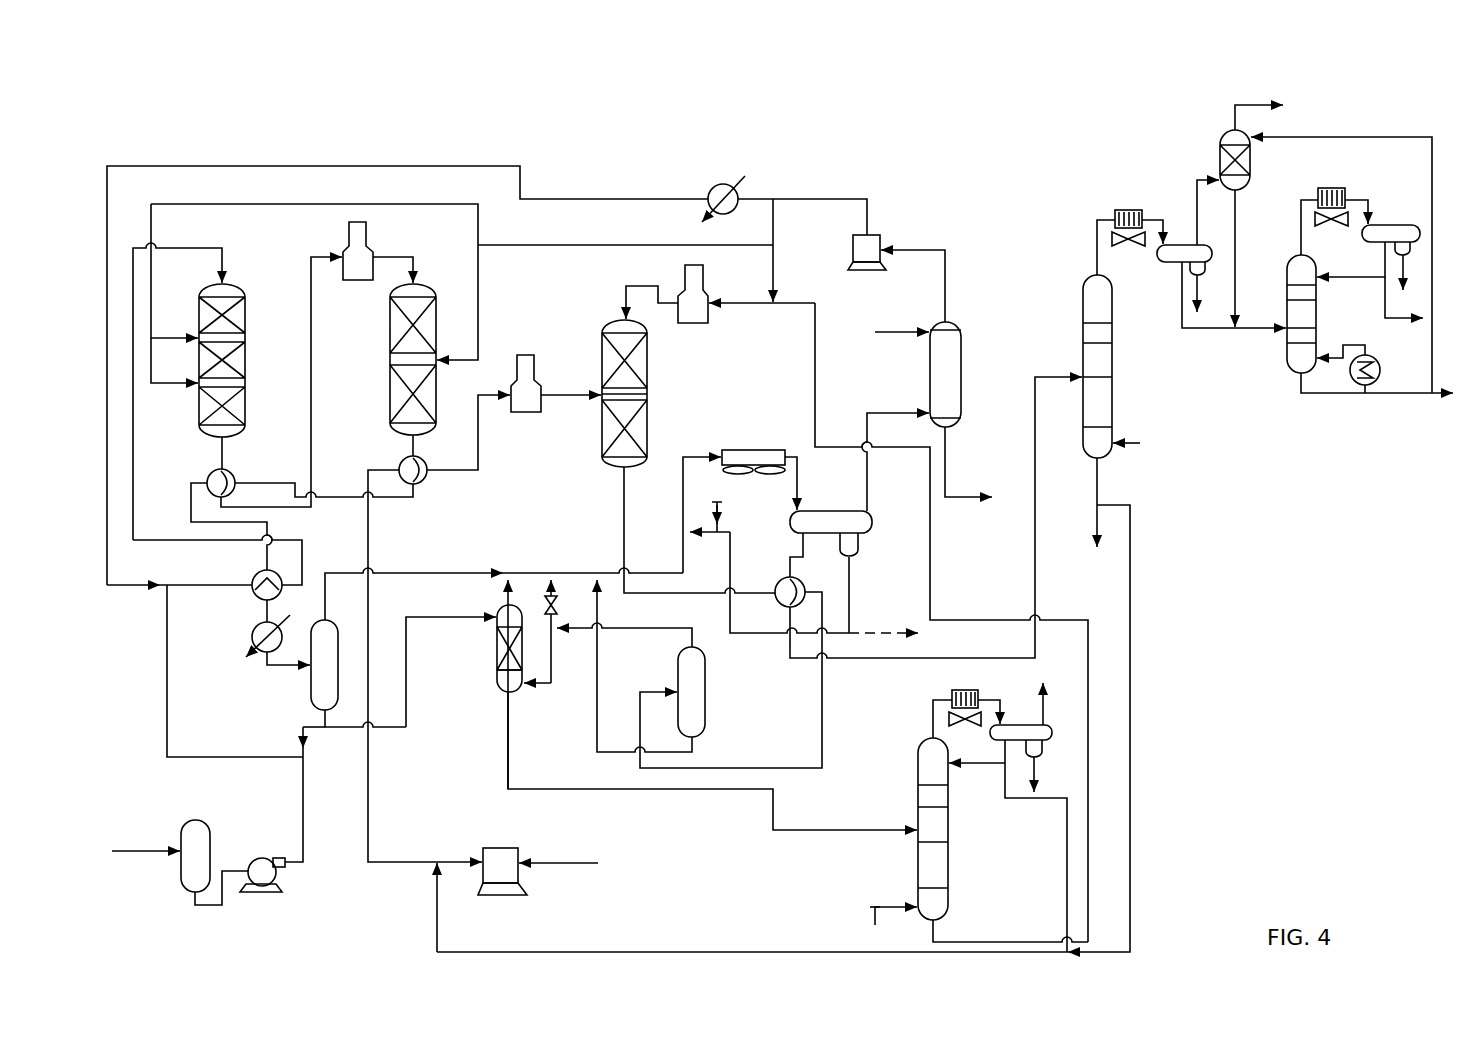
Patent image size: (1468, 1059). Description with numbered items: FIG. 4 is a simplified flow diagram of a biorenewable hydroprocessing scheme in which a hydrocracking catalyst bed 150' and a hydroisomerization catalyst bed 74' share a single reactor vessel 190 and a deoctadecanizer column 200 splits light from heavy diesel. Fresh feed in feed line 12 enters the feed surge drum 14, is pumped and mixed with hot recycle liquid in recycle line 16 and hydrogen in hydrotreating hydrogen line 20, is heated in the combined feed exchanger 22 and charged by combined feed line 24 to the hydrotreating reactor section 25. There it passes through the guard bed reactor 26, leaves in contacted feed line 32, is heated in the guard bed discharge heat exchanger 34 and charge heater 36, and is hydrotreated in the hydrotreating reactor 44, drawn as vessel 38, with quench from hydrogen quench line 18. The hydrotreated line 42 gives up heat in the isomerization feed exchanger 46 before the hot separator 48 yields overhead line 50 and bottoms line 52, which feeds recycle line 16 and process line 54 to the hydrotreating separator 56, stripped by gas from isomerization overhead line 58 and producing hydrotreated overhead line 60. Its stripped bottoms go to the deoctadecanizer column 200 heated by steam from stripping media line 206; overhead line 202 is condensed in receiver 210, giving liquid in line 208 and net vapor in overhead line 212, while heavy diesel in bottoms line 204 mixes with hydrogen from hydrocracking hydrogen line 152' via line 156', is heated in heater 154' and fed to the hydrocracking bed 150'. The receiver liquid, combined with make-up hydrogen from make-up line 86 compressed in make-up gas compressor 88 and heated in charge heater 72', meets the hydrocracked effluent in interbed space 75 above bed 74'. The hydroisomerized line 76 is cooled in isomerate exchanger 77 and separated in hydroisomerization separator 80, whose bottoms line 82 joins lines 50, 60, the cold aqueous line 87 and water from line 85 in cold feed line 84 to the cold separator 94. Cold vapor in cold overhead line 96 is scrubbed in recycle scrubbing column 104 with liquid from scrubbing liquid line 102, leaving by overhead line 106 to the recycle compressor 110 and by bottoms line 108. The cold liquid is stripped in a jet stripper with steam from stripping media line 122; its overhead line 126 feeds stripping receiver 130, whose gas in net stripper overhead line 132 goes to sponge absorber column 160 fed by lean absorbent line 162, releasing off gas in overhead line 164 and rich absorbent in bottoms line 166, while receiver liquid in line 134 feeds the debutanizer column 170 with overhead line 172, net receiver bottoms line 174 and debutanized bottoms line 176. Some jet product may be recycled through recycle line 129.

The feed line 12 is at (124, 851).
The feed surge drum 14 is at (186, 820).
The recycle line 16 is at (315, 735).
The hydrogen quench line 18 is at (585, 245).
The hydrotreating hydrogen line 20 is at (257, 166).
The combined feed exchanger 22 is at (270, 578).
The combined feed line 24 is at (203, 590).
The hydrotreating reactor section 25 is at (172, 142).
The guard bed reactor 26 is at (228, 284).
The contacted feed line 32 is at (221, 449).
The guard bed discharge heat exchanger 34 is at (207, 480).
The charge heater 36 is at (343, 250).
The second reactor 38 is at (413, 262).
The hydrotreated line 42 is at (413, 448).
The hydrotreating reactor 44 is at (390, 380).
The isomerization feed exchanger 46 is at (427, 460).
The hot separator 48 is at (311, 690).
The hot separator overhead line 50 is at (436, 570).
The hot separator bottoms line 52 is at (322, 727).
The process line 54 is at (430, 617).
The hydrotreating separator 56 is at (497, 684).
The isomerization overhead line 58 is at (660, 628).
The hydrotreated overhead line 60 is at (503, 605).
The hydroisomerization charge heater 72' is at (556, 383).
The hydroisomerization catalyst bed 74' is at (597, 428).
The interbed space 75 is at (650, 395).
The hydroisomerized line 76 is at (624, 482).
The isomerate exchanger 77 is at (777, 598).
The hydroisomerization separator 80 is at (705, 690).
The hydroisomerization bottoms line 82 is at (597, 660).
The cold feed line 84 is at (683, 522).
The water line 85 is at (717, 510).
The make-up line 86 is at (587, 863).
The cold aqueous line 87 is at (852, 590).
The make-up gas compressor 88 is at (498, 848).
The cold separator 94 is at (872, 527).
The cold overhead line 96 is at (867, 496).
The scrubbing liquid line 102 is at (890, 332).
The recycle scrubbing column 104 is at (961, 348).
The recycle scrubber overhead line 106 is at (945, 262).
The recycle scrubber bottoms line 108 is at (945, 448).
The recycle compressor 110 is at (853, 248).
The stripping media line 122 is at (1140, 443).
The stripper overhead line 126 is at (1097, 262).
The recycle line 129 is at (1130, 525).
The stripping receiver 130 is at (1180, 245).
The net stripper overhead line 132 is at (1197, 180).
The stripper receiver bottoms line 134 is at (1182, 298).
The hydrocracking catalyst bed 150' is at (655, 366).
The hydrocracking hydrogen line 152' is at (807, 250).
The heater 154' is at (675, 315).
The heater feed line 156' is at (762, 324).
The sponge absorber column 160 is at (1222, 132).
The lean absorbent line 162 is at (1305, 137).
The sponge absorber overhead line 164 is at (1248, 105).
The rich absorber bottoms line 166 is at (1235, 283).
The debutanizer column 170 is at (1287, 260).
The debutanizer overhead line 172 is at (1302, 236).
The net receiver bottoms line 174 is at (1385, 295).
The debutanized bottoms line 176 is at (1350, 393).
The reactor vessel 190 is at (602, 333).
The deoctadecanizer column 200 is at (918, 745).
The overhead line 202 is at (933, 700).
The bottoms line 204 is at (1010, 942).
The stripping media line 206 is at (896, 926).
The overhead liquid line 208 is at (1020, 800).
The deoctadecanizer receiver 210 is at (1020, 725).
The overhead line 212 is at (1045, 715).